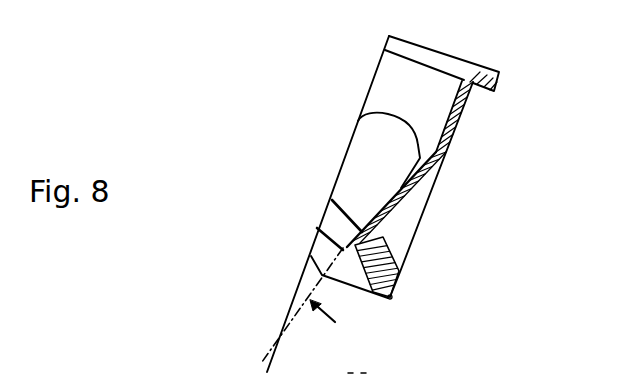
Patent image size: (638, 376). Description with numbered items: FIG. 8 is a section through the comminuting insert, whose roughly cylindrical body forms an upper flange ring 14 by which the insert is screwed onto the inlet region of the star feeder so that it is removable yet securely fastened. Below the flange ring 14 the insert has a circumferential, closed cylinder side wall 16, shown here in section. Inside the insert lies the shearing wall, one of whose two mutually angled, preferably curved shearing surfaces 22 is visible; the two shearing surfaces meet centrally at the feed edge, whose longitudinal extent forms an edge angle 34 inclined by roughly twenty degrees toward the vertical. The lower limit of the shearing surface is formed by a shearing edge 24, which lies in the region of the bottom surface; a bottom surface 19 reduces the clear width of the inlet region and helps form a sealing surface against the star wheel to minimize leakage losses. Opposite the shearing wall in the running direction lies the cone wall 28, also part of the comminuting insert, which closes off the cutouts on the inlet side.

The flange ring 14 is at (495, 75).
The cylinder side wall 16 is at (455, 120).
The shearing surface 22 is at (382, 172).
The bottom surface 19 is at (390, 297).
The shearing edge 24 is at (332, 200).
The edge angle 34 is at (298, 287).
The cone wall 28 is at (201, 312).